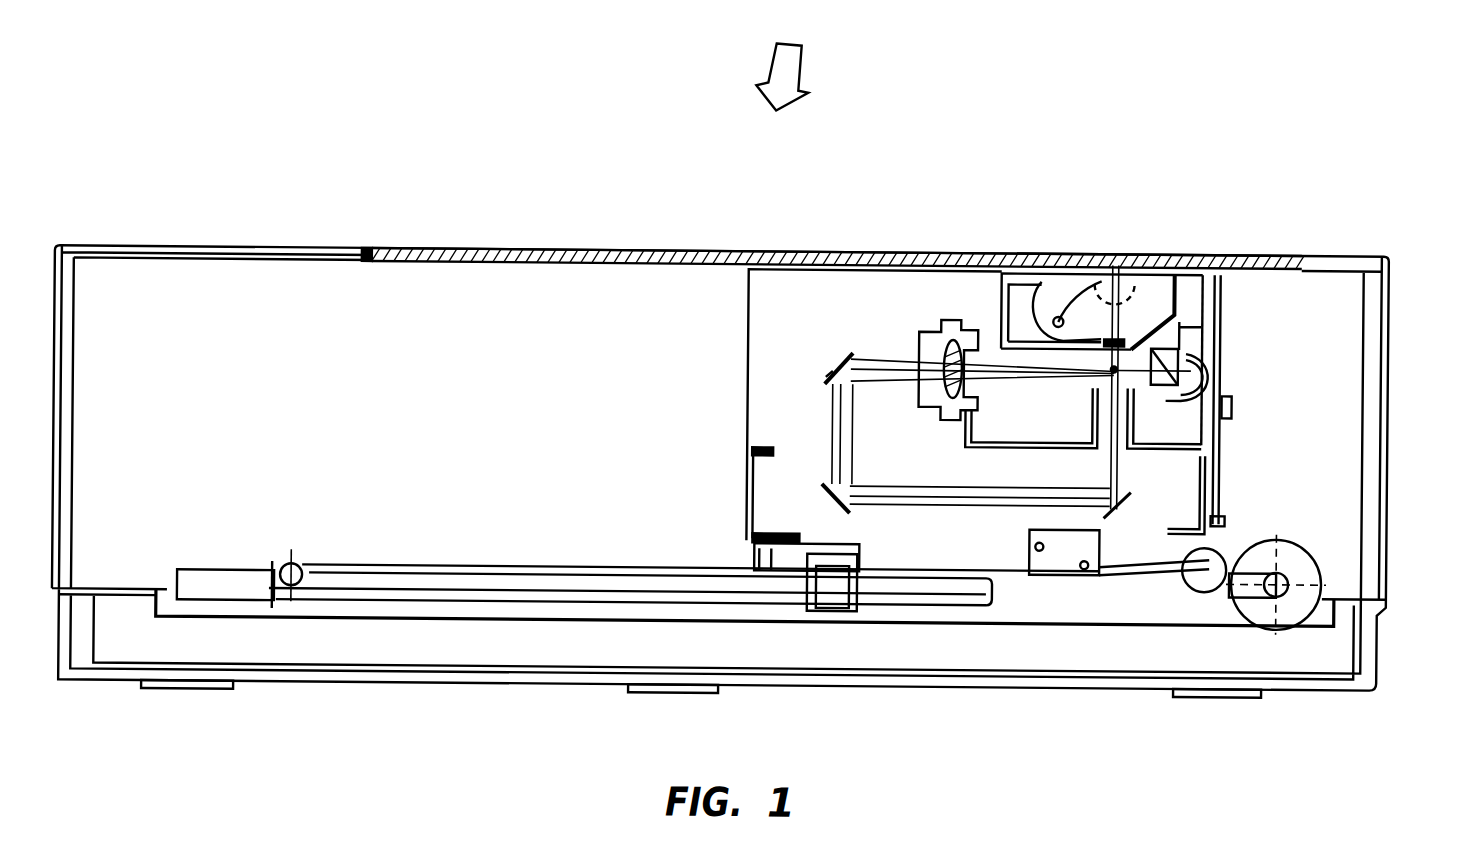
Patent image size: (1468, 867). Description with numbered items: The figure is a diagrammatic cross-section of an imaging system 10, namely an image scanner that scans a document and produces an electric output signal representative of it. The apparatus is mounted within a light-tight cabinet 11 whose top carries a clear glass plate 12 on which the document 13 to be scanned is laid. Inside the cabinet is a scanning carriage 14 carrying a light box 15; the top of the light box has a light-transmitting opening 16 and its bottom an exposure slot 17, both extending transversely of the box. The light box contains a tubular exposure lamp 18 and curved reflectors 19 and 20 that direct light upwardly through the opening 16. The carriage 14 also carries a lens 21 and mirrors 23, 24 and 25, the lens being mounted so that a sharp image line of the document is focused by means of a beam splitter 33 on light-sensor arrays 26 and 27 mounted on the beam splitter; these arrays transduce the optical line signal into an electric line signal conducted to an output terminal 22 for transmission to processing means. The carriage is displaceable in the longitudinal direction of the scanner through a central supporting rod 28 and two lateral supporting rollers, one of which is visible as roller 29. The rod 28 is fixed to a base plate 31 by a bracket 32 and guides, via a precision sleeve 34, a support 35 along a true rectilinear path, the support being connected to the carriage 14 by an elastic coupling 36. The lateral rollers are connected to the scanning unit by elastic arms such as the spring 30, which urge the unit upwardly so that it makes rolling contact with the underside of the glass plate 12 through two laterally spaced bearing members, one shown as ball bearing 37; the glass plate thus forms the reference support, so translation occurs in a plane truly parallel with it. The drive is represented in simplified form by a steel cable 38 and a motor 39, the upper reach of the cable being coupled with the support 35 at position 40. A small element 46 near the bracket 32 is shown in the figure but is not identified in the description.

The scanner apparatus 10 is at (803, 77).
The light-tight cabinet 11 is at (1389, 486).
The clear glass plate 12 is at (468, 252).
The document 13 is at (612, 252).
The scanning carriage 14 is at (747, 312).
The light box 15 is at (984, 312).
The light-transmitting opening 16 is at (1110, 279).
The exposure slot 17 is at (1176, 304).
The tubular exposure lamp 18 is at (1060, 314).
The curved reflector 19 is at (1044, 282).
The curved reflector 20 is at (1126, 332).
The lens 21 is at (950, 328).
The output terminal 22 is at (1232, 411).
The mirror 23 is at (836, 352).
The mirror 24 is at (836, 502).
The mirror 25 is at (1115, 518).
The light-sensor array 26 is at (1180, 362).
The light-sensor array 27 is at (1198, 394).
The central supporting rod 28 is at (930, 600).
The lateral supporting roller 29 is at (1207, 588).
The spring 30 is at (1204, 588).
The base plate 31 is at (380, 624).
The bracket 32 is at (276, 573).
The beam splitter 33 is at (1195, 343).
The precision sleeve 34 is at (845, 611).
The support 35 is at (760, 548).
The elastic coupling 36 is at (773, 531).
The bearing member 37 is at (1119, 300).
The steel cable 38 is at (430, 567).
The motor 39 is at (1292, 602).
The coupling position 40 is at (812, 566).
The roller 46 is at (292, 567).